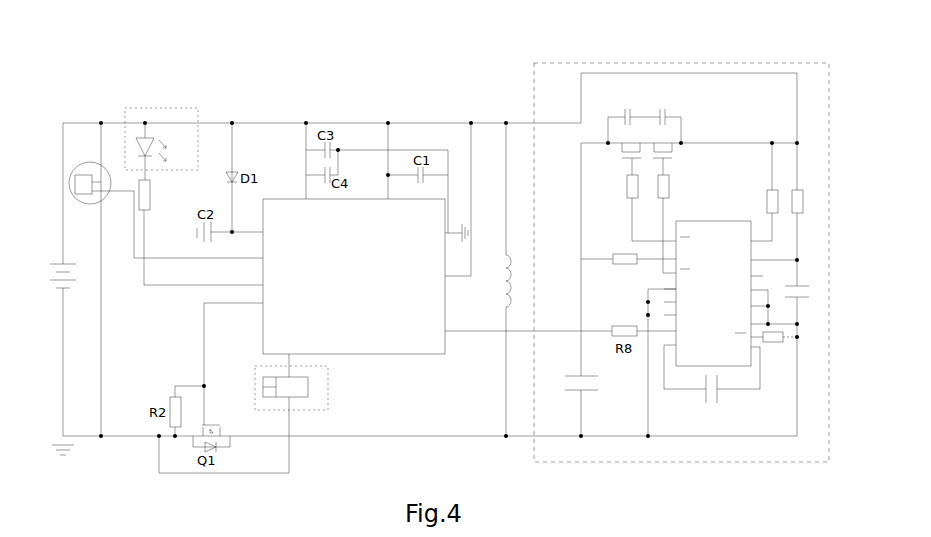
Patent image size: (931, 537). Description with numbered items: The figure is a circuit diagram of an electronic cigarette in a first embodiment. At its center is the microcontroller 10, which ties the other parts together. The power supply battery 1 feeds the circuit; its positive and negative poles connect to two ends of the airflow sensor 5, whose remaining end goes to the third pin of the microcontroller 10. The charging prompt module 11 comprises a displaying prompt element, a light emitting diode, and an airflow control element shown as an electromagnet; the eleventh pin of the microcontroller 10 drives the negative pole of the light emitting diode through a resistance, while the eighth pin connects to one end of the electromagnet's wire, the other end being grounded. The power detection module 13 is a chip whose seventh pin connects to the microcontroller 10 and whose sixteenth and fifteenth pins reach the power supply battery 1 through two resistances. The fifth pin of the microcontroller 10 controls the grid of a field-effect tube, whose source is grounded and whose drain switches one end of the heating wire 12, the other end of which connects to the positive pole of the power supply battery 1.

The power supply battery 1 is at (56, 289).
The airflow sensor 5 is at (166, 210).
The microcontroller 10 is at (358, 277).
The charging prompt module 11 is at (344, 371).
The heating wire 12 is at (499, 279).
The power detection module 13 is at (682, 63).